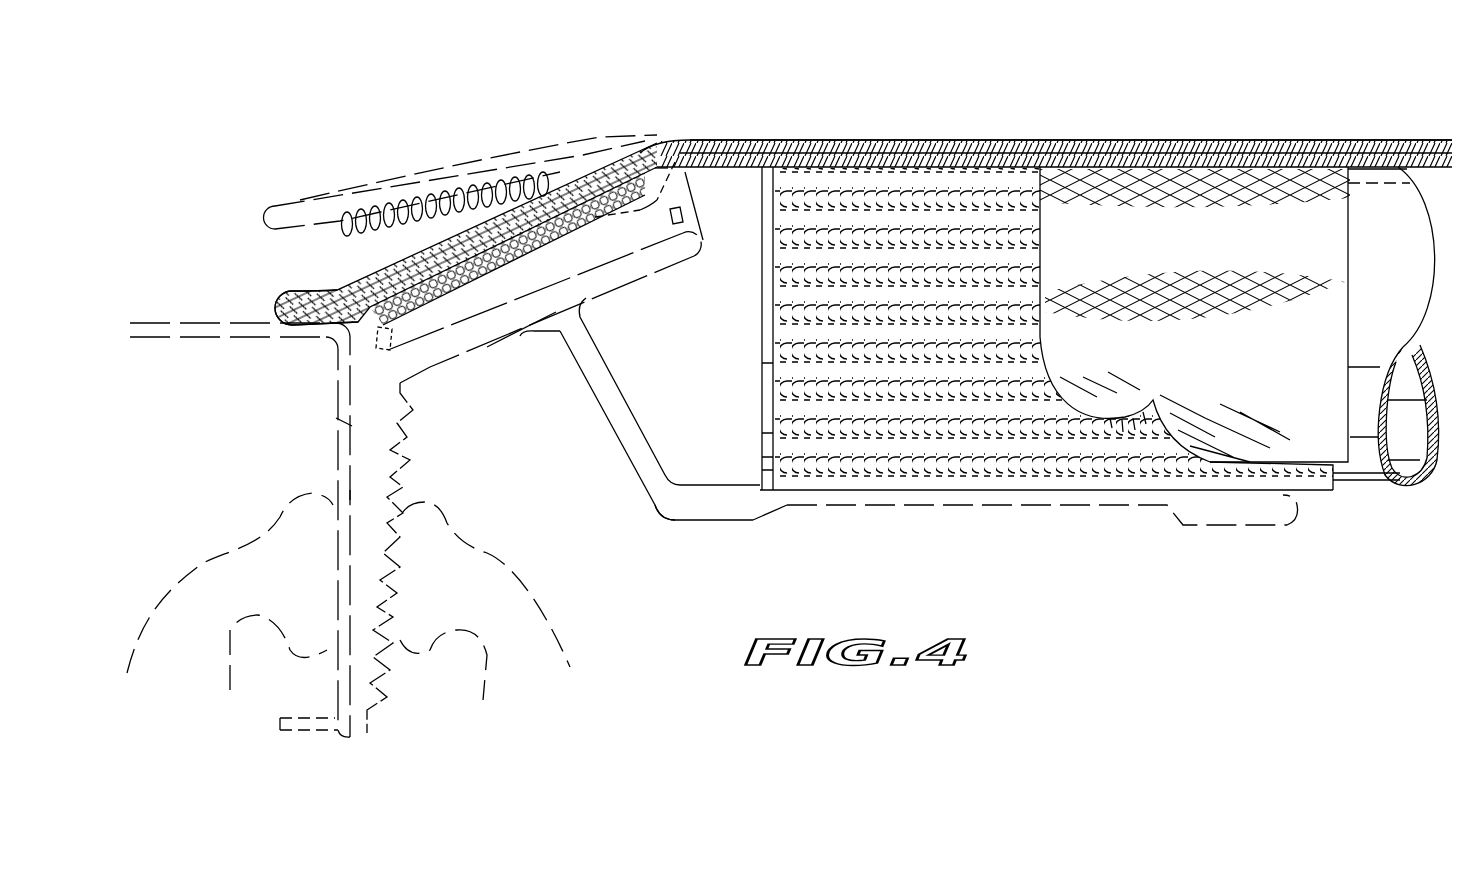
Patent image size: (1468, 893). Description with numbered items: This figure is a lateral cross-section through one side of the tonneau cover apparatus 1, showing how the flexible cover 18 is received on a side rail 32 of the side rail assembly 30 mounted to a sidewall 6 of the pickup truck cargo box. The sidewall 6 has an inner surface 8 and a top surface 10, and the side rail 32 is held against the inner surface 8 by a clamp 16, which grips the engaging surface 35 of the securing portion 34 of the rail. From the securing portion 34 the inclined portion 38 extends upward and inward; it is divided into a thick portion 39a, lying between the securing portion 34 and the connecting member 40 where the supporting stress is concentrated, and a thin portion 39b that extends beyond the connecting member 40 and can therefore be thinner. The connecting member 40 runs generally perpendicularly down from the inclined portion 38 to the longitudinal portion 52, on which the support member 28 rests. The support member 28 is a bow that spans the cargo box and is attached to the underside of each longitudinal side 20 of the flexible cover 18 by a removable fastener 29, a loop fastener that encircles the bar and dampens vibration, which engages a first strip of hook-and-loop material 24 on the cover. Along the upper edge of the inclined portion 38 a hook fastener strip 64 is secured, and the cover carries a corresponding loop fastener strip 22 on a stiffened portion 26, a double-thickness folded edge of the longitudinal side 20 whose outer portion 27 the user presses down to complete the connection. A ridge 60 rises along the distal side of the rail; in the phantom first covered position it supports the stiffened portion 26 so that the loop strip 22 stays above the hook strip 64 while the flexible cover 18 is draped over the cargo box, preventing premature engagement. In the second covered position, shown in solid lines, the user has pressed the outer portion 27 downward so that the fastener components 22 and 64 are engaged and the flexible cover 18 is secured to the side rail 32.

The tonneau cover apparatus 1 is at (978, 135).
The sidewall 6 is at (340, 477).
The inner surface 8 is at (368, 494).
The top surface 10 is at (158, 322).
The clamp 16 is at (190, 575).
The flexible cover 18 is at (1298, 140).
The longitudinal side 20 is at (272, 312).
The strip of hook and/or loop fastening material 22 is at (345, 242).
The first strip of hook and/or loop fastener material 24 is at (1312, 235).
The stiffened portion 26 is at (747, 134).
The outer portion 27 is at (527, 147).
The support member 28 is at (1404, 300).
The second reciprocating hook and/or loop fastening strip 29 is at (855, 497).
The side rail assembly 30 is at (679, 535).
The side rail 32 is at (535, 345).
The securing portion 34 is at (412, 455).
The engaging surface 35 is at (340, 422).
The inclined portion 38 is at (487, 347).
The thick portion 39a is at (443, 367).
The thin portion 39b is at (644, 273).
The connecting member 40 is at (637, 410).
The longitudinal portion 52 is at (1060, 508).
The ridge 60 is at (685, 178).
The strip of hook and/or loop fastening material 64 is at (383, 350).